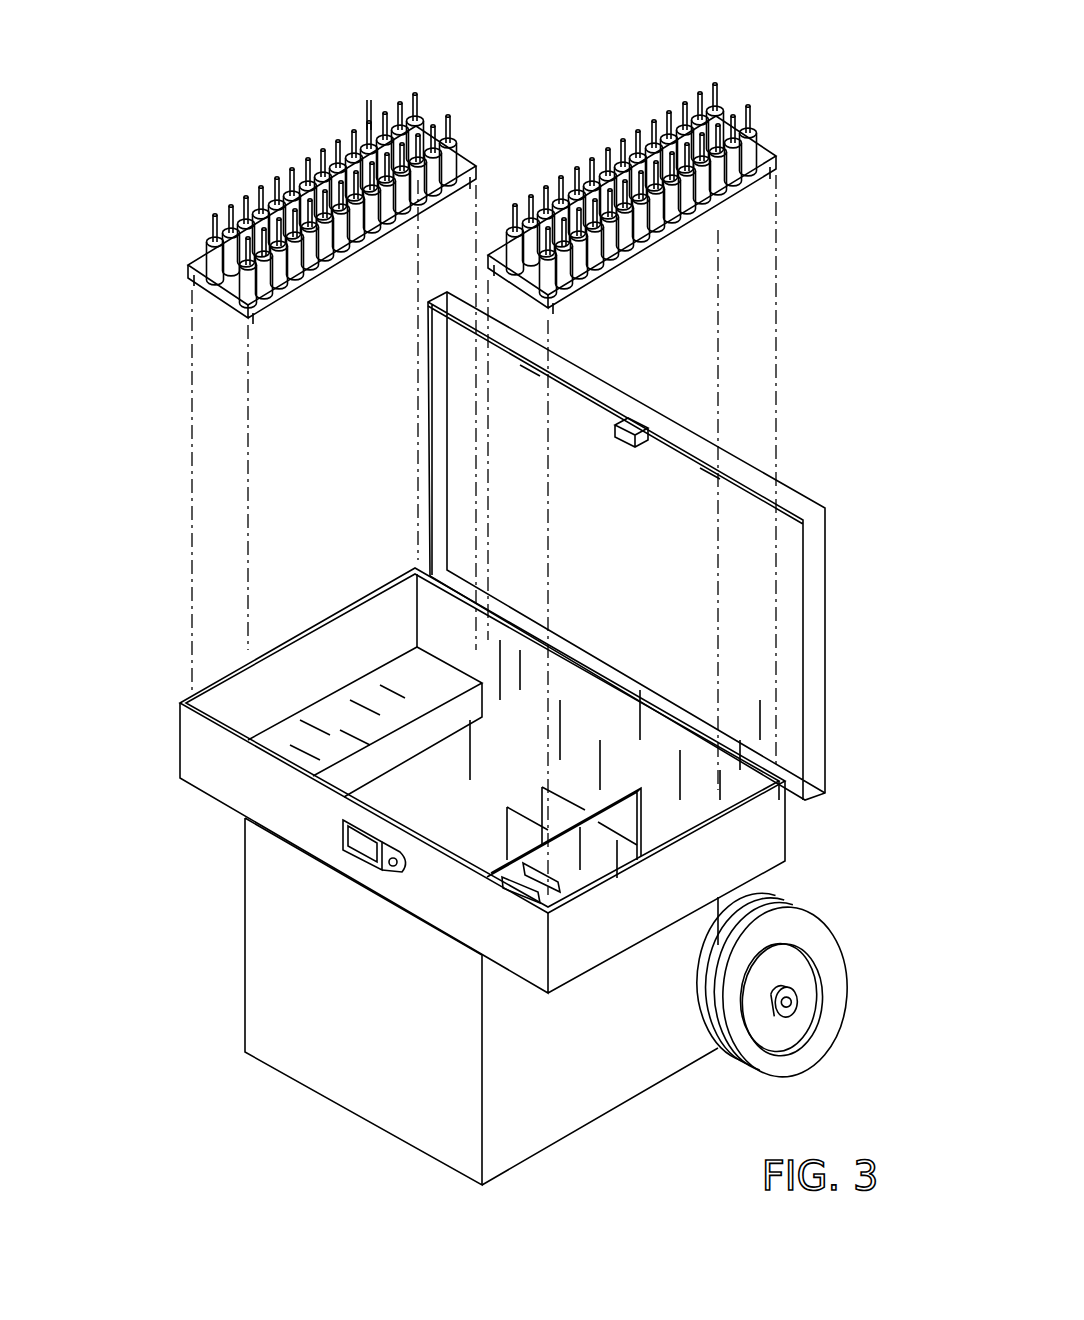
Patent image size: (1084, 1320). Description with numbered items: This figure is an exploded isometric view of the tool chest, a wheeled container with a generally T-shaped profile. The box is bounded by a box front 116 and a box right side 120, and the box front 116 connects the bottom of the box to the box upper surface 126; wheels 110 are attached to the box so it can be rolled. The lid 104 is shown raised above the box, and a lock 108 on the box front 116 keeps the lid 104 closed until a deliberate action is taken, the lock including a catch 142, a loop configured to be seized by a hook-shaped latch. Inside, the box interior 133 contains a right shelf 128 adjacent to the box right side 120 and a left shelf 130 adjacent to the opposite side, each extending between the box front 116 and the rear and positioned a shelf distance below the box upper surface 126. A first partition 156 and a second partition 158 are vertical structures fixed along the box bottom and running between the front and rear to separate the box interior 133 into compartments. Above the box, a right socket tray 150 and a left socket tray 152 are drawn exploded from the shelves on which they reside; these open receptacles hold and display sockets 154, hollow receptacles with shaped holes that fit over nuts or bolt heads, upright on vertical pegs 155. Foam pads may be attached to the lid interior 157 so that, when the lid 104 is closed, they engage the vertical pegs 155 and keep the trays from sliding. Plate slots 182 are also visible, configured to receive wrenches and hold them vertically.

The lid 104 is at (820, 577).
The lock 108 is at (363, 838).
The wheels 110 is at (810, 1040).
The box front 116 is at (408, 1110).
The box right side 120 is at (600, 1098).
The box upper surface 126 is at (180, 700).
The right shelf 128 is at (700, 822).
The left shelf 130 is at (450, 787).
The box interior 133 is at (407, 672).
The catch 142 is at (628, 425).
The right socket tray 150 is at (777, 160).
The left socket tray 152 is at (190, 277).
The sockets 154 is at (453, 158).
The vertical pegs 155 is at (372, 133).
The first partition 156 is at (745, 757).
The lid interior 157 is at (788, 528).
The second partition 158 is at (570, 733).
The plate slots 182 is at (548, 915).